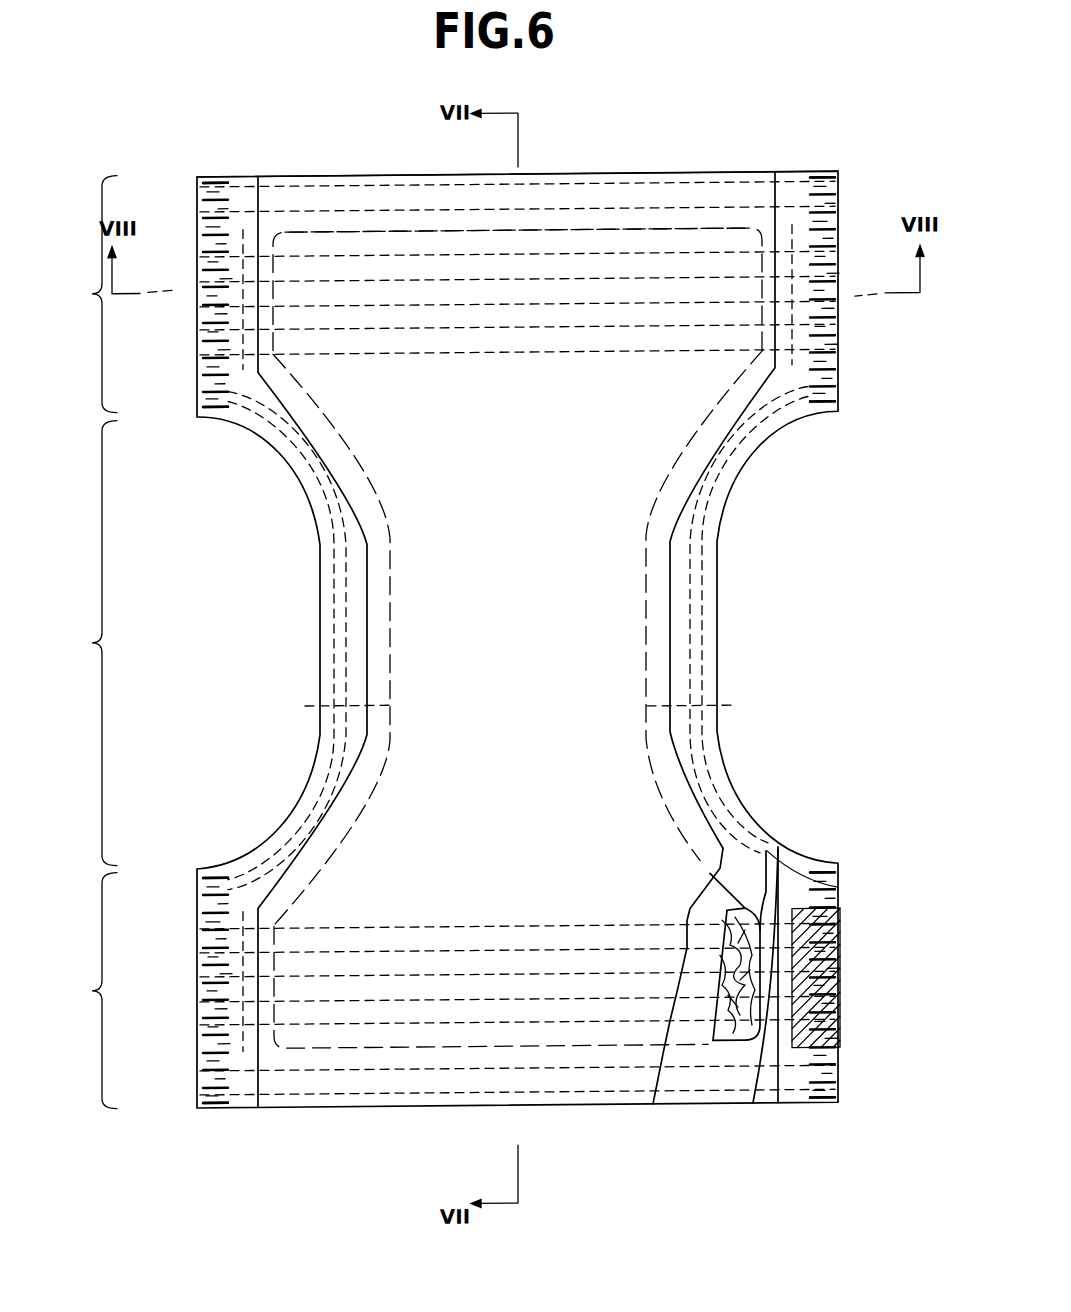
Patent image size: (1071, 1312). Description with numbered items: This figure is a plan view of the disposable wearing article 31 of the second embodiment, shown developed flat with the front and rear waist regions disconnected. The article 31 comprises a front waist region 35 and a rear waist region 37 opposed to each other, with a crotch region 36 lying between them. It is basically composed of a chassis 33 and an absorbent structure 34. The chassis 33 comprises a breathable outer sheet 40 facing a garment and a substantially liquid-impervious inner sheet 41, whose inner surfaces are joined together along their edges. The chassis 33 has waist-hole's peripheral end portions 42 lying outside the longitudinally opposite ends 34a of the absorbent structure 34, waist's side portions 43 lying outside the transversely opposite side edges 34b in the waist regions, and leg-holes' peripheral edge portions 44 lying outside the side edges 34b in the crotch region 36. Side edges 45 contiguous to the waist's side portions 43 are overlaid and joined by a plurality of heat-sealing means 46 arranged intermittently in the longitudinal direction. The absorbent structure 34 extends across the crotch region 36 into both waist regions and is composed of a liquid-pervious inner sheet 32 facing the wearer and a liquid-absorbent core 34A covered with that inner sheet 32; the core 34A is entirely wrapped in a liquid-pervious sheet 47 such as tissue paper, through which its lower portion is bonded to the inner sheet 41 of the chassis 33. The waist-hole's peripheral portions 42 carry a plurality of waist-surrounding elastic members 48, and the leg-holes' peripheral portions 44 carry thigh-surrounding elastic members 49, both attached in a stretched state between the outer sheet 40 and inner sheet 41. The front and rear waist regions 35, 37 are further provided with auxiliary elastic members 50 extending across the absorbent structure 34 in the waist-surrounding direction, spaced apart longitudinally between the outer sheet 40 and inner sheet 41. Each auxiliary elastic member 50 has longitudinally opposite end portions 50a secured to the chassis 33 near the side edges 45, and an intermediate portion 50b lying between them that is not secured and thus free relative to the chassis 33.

The article 31 is at (752, 141).
The liquid-pervious inner sheet 32 is at (627, 1062).
The chassis 33 is at (838, 178).
The absorbent structure 34 is at (718, 915).
The liquid-absorbent core 34A is at (766, 856).
The longitudinally opposite ends of the absorbent structure 34a is at (611, 236).
The transversely opposite side edges of the absorbent structure 34b is at (520, 714).
The front waist region 35 is at (81, 991).
The crotch region 36 is at (80, 644).
The rear waist region 37 is at (83, 295).
The outer sheet 40 is at (793, 1086).
The inner sheet 41 is at (747, 1060).
The waist-hole's peripheral end portions 42 is at (690, 200).
The waist's side portions 43 is at (250, 250).
The leg-holes' peripheral edge portions 44 is at (340, 606).
The side edges 45 is at (197, 206).
The heat-sealing means 46 is at (215, 199).
The liquid-pervious sheet 47 is at (693, 1042).
The waist-surrounding elastic members 48 is at (420, 209).
The thigh-surrounding elastic members 49 is at (330, 490).
The auxiliary elastic members 50 is at (513, 286).
The longitudinally opposite end portions 50a is at (195, 267).
The intermediate portion 50b is at (538, 258).